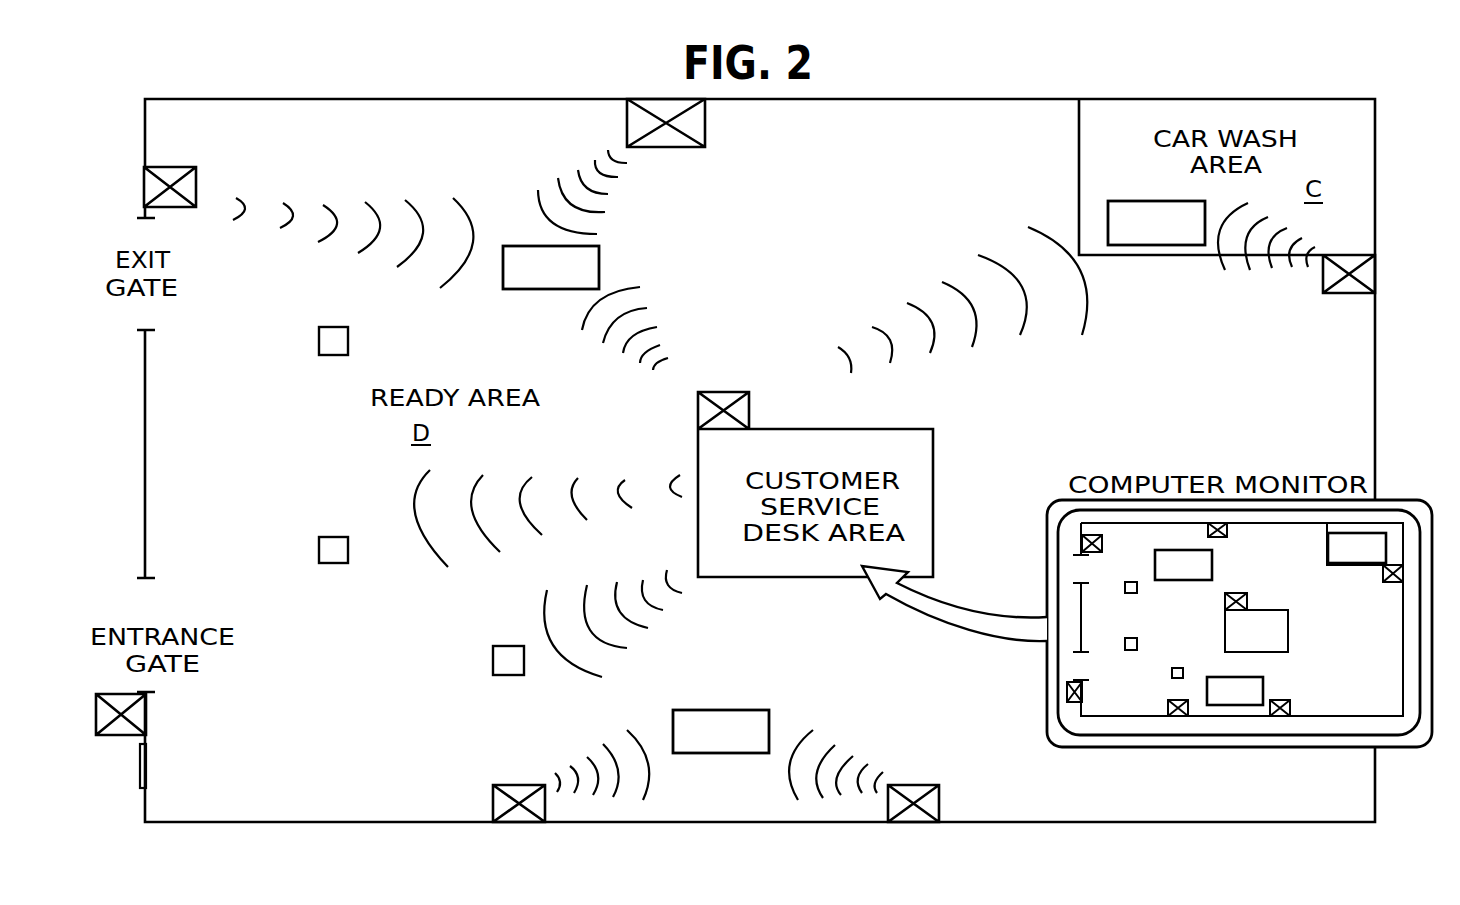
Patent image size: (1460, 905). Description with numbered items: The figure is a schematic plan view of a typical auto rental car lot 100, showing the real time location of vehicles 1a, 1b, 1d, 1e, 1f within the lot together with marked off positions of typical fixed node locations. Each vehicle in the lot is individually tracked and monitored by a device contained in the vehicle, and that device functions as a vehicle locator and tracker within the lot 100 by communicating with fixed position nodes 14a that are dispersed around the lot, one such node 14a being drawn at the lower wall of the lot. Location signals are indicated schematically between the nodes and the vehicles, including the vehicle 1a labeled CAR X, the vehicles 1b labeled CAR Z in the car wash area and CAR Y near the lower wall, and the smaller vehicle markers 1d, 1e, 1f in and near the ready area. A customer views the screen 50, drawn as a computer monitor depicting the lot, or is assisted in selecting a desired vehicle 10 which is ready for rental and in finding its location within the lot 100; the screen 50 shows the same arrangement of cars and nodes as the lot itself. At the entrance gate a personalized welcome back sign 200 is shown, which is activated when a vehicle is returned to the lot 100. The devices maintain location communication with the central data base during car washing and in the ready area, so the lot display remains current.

The vehicle 10 is at (511, 226).
The vehicle 1a is at (530, 289).
The vehicle 1b is at (1165, 245).
The vehicle 1d is at (332, 340).
The vehicle 1e is at (335, 548).
The vehicle 1f is at (493, 659).
The fixed position node 14a is at (518, 822).
The screen 50 is at (1398, 500).
The lot 100 is at (271, 465).
The welcome back sign 200 is at (146, 752).